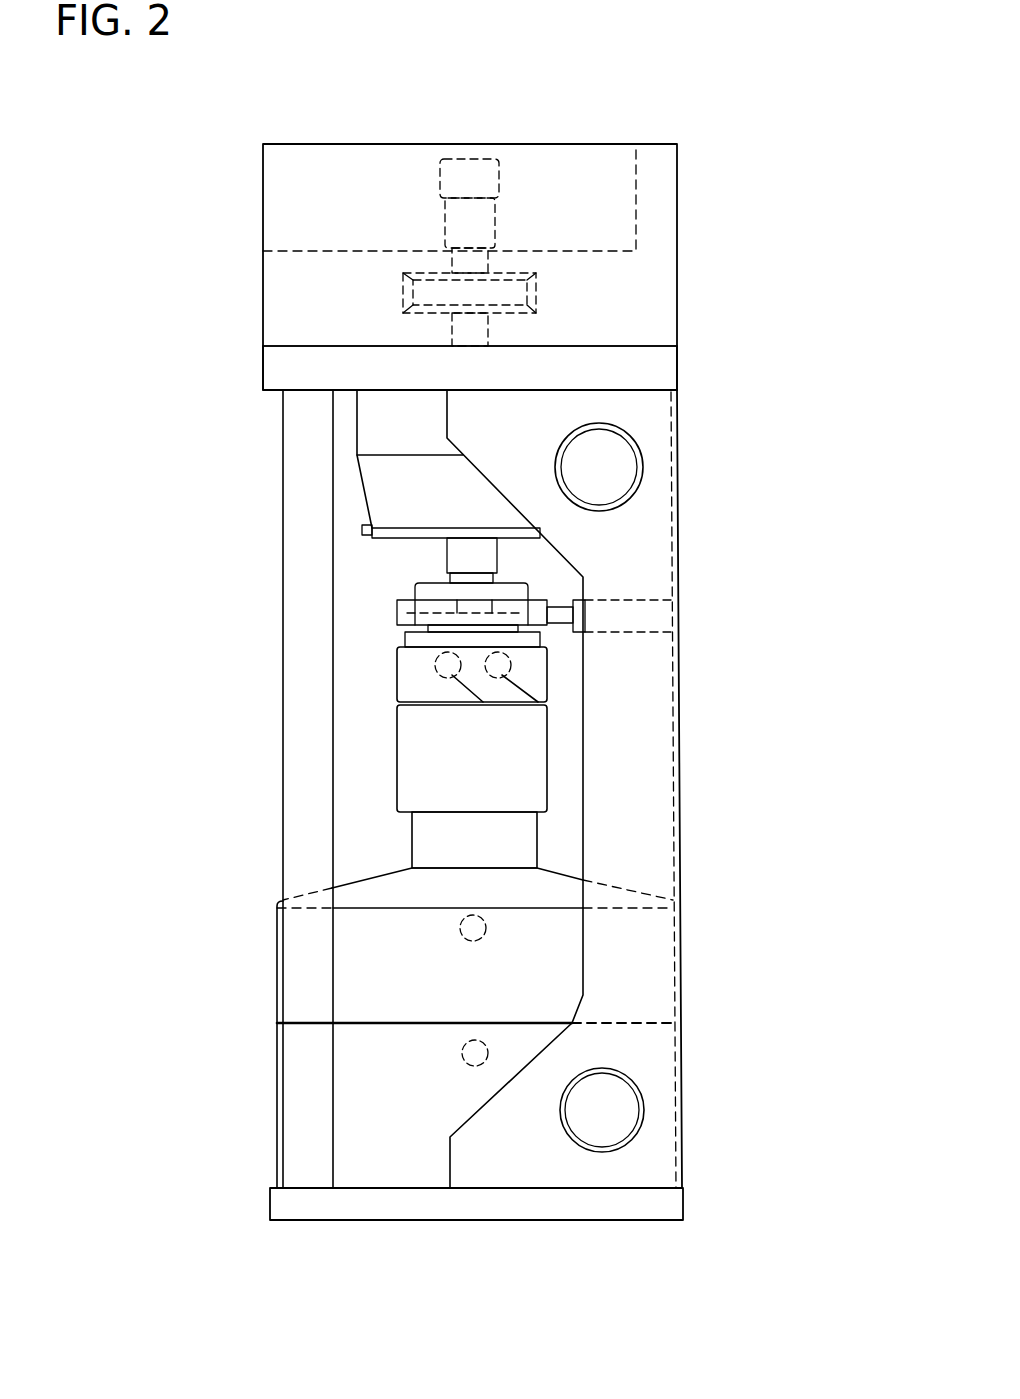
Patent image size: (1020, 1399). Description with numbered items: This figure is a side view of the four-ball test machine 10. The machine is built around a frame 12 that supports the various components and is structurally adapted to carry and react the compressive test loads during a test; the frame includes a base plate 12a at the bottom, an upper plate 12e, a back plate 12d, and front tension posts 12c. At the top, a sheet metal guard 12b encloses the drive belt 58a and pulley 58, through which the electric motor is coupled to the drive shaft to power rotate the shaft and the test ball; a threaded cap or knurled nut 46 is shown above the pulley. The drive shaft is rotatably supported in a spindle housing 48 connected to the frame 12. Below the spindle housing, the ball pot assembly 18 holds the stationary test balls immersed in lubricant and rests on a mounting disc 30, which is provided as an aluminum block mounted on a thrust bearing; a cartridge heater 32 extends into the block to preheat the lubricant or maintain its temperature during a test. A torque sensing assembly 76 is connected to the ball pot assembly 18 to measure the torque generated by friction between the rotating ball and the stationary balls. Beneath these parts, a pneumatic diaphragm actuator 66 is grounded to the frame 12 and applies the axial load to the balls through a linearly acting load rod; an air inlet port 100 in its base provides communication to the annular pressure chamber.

The four-ball test machine 10 is at (213, 198).
The frame 12 is at (531, 443).
The base plate 12a is at (642, 1220).
The sheet metal guard for drive belt 12b is at (354, 321).
The tension posts 12c is at (308, 1117).
The back plate 12d is at (682, 997).
The upper plate 12e is at (652, 367).
The ball pot assembly 18 is at (548, 560).
The ball pot mounting disc/aluminum block of heater 30 is at (547, 678).
The cartridge heater 32 is at (502, 710).
The threaded cap/knurled nut 46 is at (498, 188).
The spindle housing 48 is at (427, 443).
The pulley 58 is at (536, 274).
The drive belt 58a is at (538, 295).
The actuator 66 is at (413, 1138).
The torque sensing assembly 76 is at (585, 583).
The air inlet port 100 is at (488, 1052).